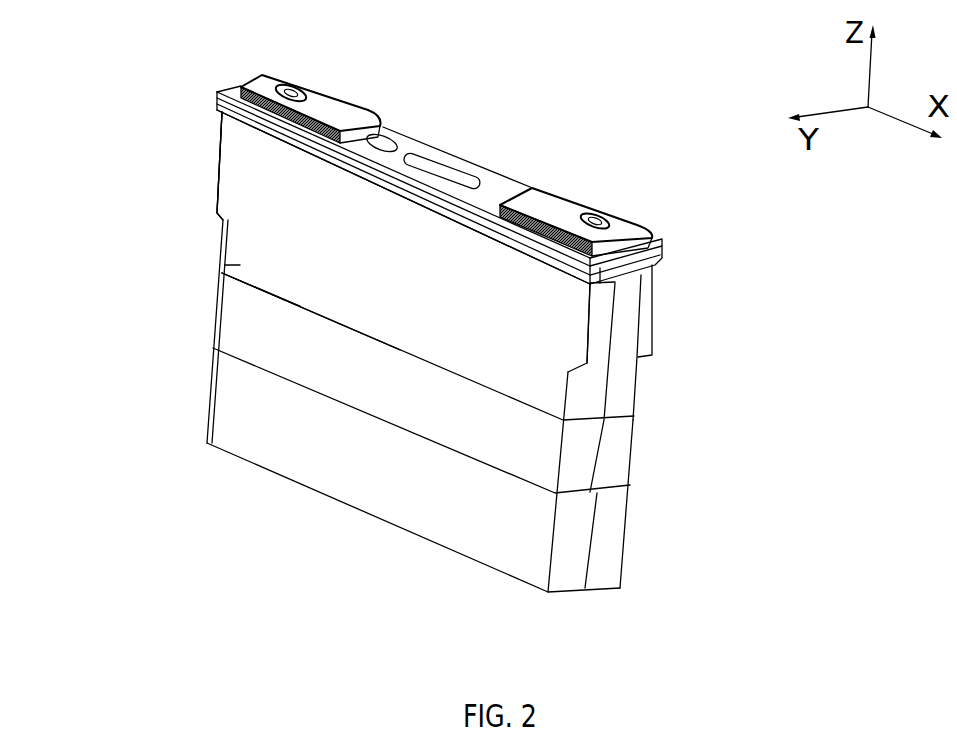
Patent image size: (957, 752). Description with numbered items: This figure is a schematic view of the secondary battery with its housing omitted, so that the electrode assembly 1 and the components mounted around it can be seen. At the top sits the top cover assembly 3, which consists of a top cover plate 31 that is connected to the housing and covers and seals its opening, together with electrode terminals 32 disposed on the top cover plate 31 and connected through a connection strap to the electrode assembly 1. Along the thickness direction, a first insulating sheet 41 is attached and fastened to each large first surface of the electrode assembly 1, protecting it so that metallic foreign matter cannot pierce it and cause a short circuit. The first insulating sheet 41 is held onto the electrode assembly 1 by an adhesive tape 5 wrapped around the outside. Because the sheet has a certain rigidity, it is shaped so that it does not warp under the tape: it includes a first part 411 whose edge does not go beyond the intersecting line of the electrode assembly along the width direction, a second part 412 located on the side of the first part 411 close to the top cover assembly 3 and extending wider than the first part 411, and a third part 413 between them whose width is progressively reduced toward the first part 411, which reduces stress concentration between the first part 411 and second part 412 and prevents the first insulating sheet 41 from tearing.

The electrode assembly 1 is at (571, 577).
The top cover assembly 3 is at (562, 110).
The adhesive tape 5 is at (260, 348).
The top cover plate 31 is at (410, 140).
The electrode terminal 32 is at (332, 98).
The first insulating sheet 41 is at (91, 136).
The first part 411 is at (225, 266).
The second part 412 is at (248, 186).
The third part 413 is at (218, 214).